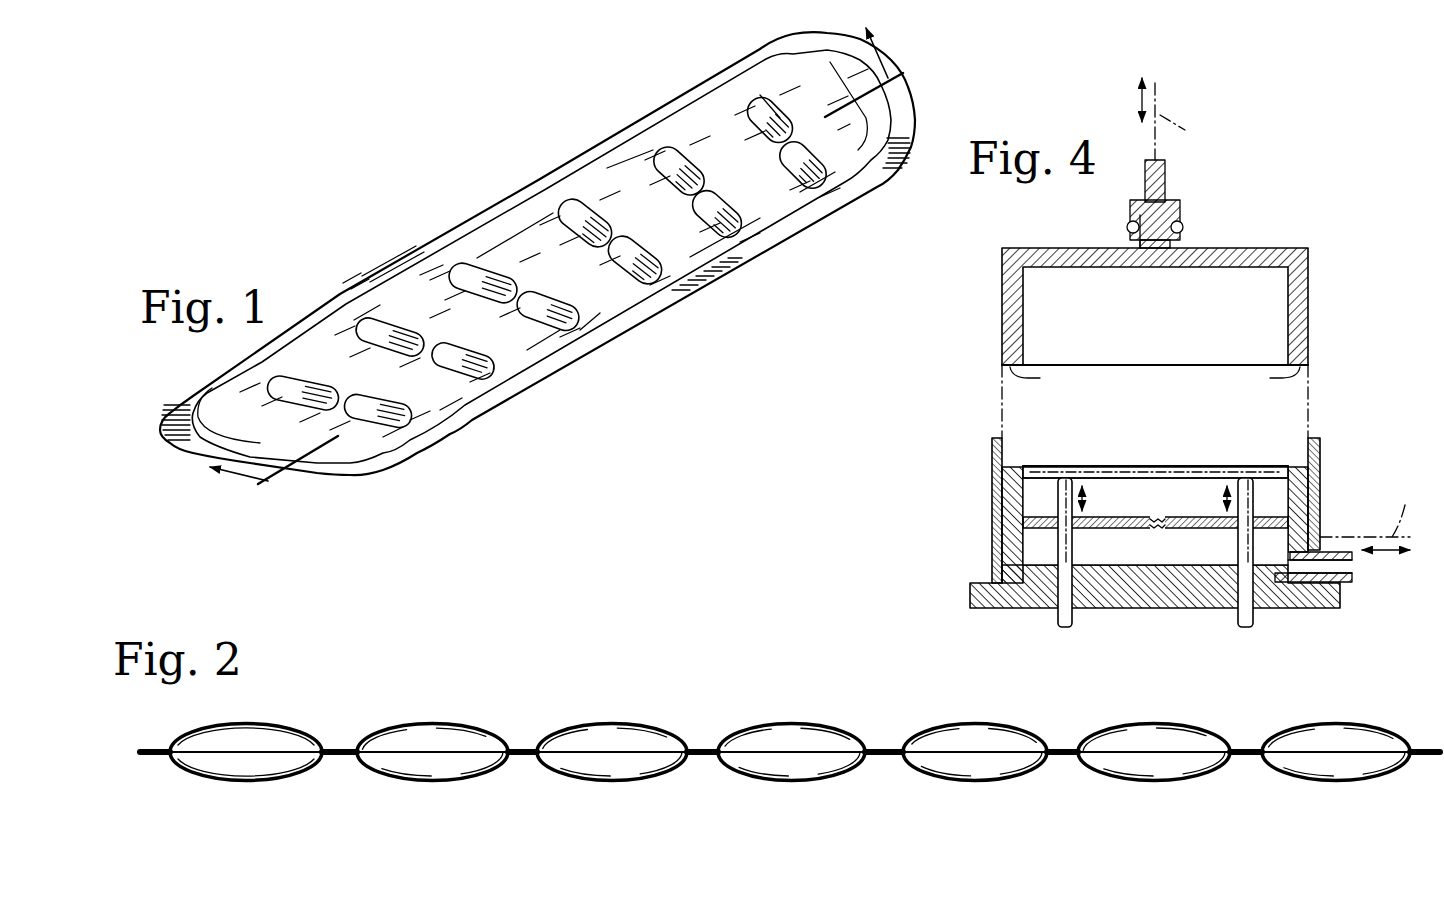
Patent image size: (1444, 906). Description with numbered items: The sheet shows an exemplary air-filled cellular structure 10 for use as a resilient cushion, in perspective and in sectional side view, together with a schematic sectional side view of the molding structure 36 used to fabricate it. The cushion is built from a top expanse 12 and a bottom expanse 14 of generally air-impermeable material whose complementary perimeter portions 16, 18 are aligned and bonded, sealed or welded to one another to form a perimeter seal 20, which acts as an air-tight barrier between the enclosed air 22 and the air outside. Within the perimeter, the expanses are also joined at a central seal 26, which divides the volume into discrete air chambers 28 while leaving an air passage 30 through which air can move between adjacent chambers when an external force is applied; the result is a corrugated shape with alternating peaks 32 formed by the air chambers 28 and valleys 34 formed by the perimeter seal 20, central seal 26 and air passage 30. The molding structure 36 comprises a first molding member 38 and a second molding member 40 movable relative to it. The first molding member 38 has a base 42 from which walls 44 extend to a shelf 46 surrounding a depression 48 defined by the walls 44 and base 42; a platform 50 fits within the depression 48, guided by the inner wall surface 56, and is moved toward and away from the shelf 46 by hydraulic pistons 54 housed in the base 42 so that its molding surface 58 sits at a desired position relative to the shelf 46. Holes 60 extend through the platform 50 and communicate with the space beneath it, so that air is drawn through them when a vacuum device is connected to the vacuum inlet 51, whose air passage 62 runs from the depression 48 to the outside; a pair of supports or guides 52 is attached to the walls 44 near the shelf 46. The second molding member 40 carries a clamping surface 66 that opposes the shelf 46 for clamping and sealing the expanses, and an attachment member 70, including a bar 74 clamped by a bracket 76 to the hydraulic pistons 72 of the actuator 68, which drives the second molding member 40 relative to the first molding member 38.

In FIG. 1, the air-filled cellular structure 10 is at (370, 210).
In FIG. 2, the air-filled cellular structure 10 is at (852, 660).
In FIG. 1, the top expanse 12 is at (520, 233).
In FIG. 2, the top expanse 12 is at (392, 708).
In FIG. 1, the bottom expanse 14 is at (529, 410).
In FIG. 2, the bottom expanse 14 is at (393, 796).
In FIG. 1, the perimeter portion 16 is at (332, 479).
In FIG. 2, the perimeter portion 16 is at (161, 748).
In FIG. 1, the perimeter portion 18 is at (361, 482).
In FIG. 2, the perimeter portion 18 is at (160, 757).
In FIG. 1, the perimeter seal 20 is at (429, 462).
In FIG. 2, the perimeter seal 20 is at (142, 751).
In FIG. 2, the enclosed air 22 is at (455, 766).
In FIG. 1, the central seal 26 is at (710, 208).
In FIG. 2, the central seal 26 is at (512, 752).
In FIG. 1, the air chamber 28 is at (783, 160).
In FIG. 2, the air chamber 28 is at (940, 727).
In FIG. 1, the air passage 30 is at (691, 191).
In FIG. 2, the air passage 30 is at (886, 759).
In FIG. 2, the peaks 32 is at (1130, 727).
In FIG. 2, the valleys 34 is at (520, 757).
In FIG. 4, the molding structure 36 is at (1280, 172).
In FIG. 4, the first molding member 38 is at (1355, 514).
In FIG. 4, the second molding member 40 is at (1355, 306).
In FIG. 4, the base 42 is at (970, 592).
In FIG. 4, the walls 44 is at (1010, 498).
In FIG. 4, the shelf 46 is at (1008, 468).
In FIG. 4, the depression 48 is at (1105, 497).
In FIG. 4, the platform 50 is at (1183, 468).
In FIG. 4, the vacuum inlet 51 is at (1347, 596).
In FIG. 4, the supports or guides 52 is at (992, 452).
In FIG. 4, the hydraulic pistons 54 is at (1073, 618).
In FIG. 4, the inner wall surface 56 is at (1024, 492).
In FIG. 4, the molding surface 58 is at (1120, 517).
In FIG. 4, the holes 60 is at (1155, 531).
In FIG. 4, the air passage 62 is at (1320, 570).
In FIG. 4, the clamping surface 66 is at (1155, 381).
In FIG. 4, the actuator 68 is at (1196, 172).
In FIG. 4, the attachment member 70 is at (1196, 234).
In FIG. 4, the hydraulic pistons 72 is at (1145, 178).
In FIG. 4, the bar 74 is at (1145, 228).
In FIG. 4, the bracket 76 is at (1182, 210).